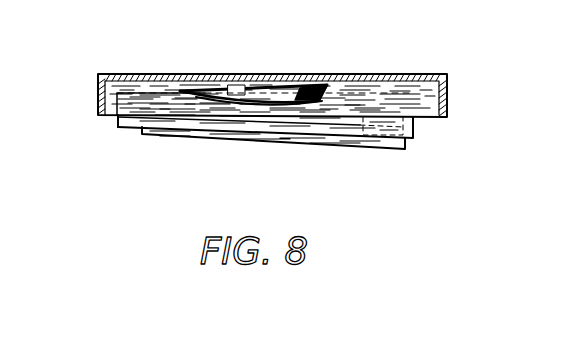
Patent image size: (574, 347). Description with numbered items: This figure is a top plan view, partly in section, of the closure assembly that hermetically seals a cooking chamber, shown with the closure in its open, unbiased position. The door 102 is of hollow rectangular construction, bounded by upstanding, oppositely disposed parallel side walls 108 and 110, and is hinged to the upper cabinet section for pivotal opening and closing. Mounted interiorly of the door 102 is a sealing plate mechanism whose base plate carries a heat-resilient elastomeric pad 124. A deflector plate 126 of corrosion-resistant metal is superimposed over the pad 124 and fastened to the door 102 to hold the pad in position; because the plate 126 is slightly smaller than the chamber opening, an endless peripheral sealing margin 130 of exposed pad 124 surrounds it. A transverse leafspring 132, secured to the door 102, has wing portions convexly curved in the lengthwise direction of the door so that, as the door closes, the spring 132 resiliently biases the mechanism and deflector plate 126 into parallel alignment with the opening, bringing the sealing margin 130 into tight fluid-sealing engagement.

The door 102 is at (342, 76).
The side wall 108 is at (98, 100).
The side wall 110 is at (447, 85).
The resilient pad 124 is at (388, 143).
The deflector plate 126 is at (257, 143).
The endless peripheral sealing margin 130 is at (128, 130).
The transverse leafspring 132 is at (231, 86).